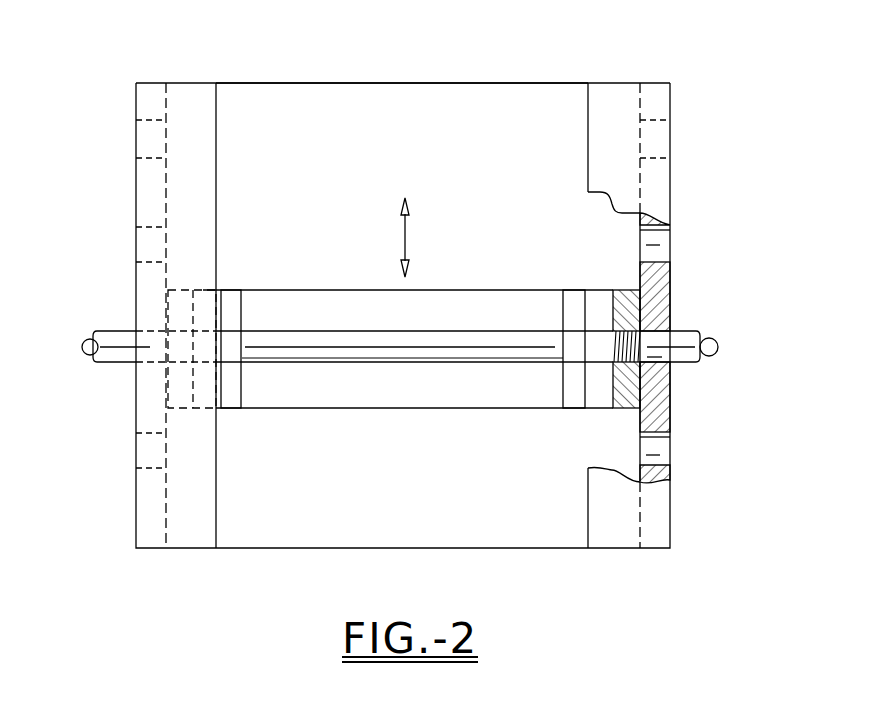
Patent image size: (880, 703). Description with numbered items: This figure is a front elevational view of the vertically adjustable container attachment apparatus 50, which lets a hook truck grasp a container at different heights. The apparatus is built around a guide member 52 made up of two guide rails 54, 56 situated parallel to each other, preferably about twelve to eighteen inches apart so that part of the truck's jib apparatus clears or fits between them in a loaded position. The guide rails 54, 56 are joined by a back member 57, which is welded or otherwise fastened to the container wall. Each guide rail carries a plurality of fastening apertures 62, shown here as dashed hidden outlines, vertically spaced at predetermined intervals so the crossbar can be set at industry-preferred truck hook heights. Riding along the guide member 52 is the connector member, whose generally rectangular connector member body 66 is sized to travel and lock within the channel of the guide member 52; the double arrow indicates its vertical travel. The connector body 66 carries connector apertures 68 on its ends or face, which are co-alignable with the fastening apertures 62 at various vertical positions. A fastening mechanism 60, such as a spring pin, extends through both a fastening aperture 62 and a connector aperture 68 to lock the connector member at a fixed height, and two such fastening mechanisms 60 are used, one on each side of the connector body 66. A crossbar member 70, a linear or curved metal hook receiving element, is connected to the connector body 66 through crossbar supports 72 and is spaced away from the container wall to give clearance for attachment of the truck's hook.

The vertically adjustable container attachment apparatus 50 is at (187, 63).
The guide member 52 is at (347, 82).
The guide rail 54 is at (143, 213).
The guide rail 56 is at (666, 182).
The back member 57 is at (502, 88).
The fastening mechanism 60 is at (97, 360).
The fastening apertures 62 is at (155, 158).
The connector member body 66 is at (347, 289).
The connector apertures 68 is at (178, 372).
The crossbar member 70 is at (386, 357).
The crossbar support 72 is at (233, 410).